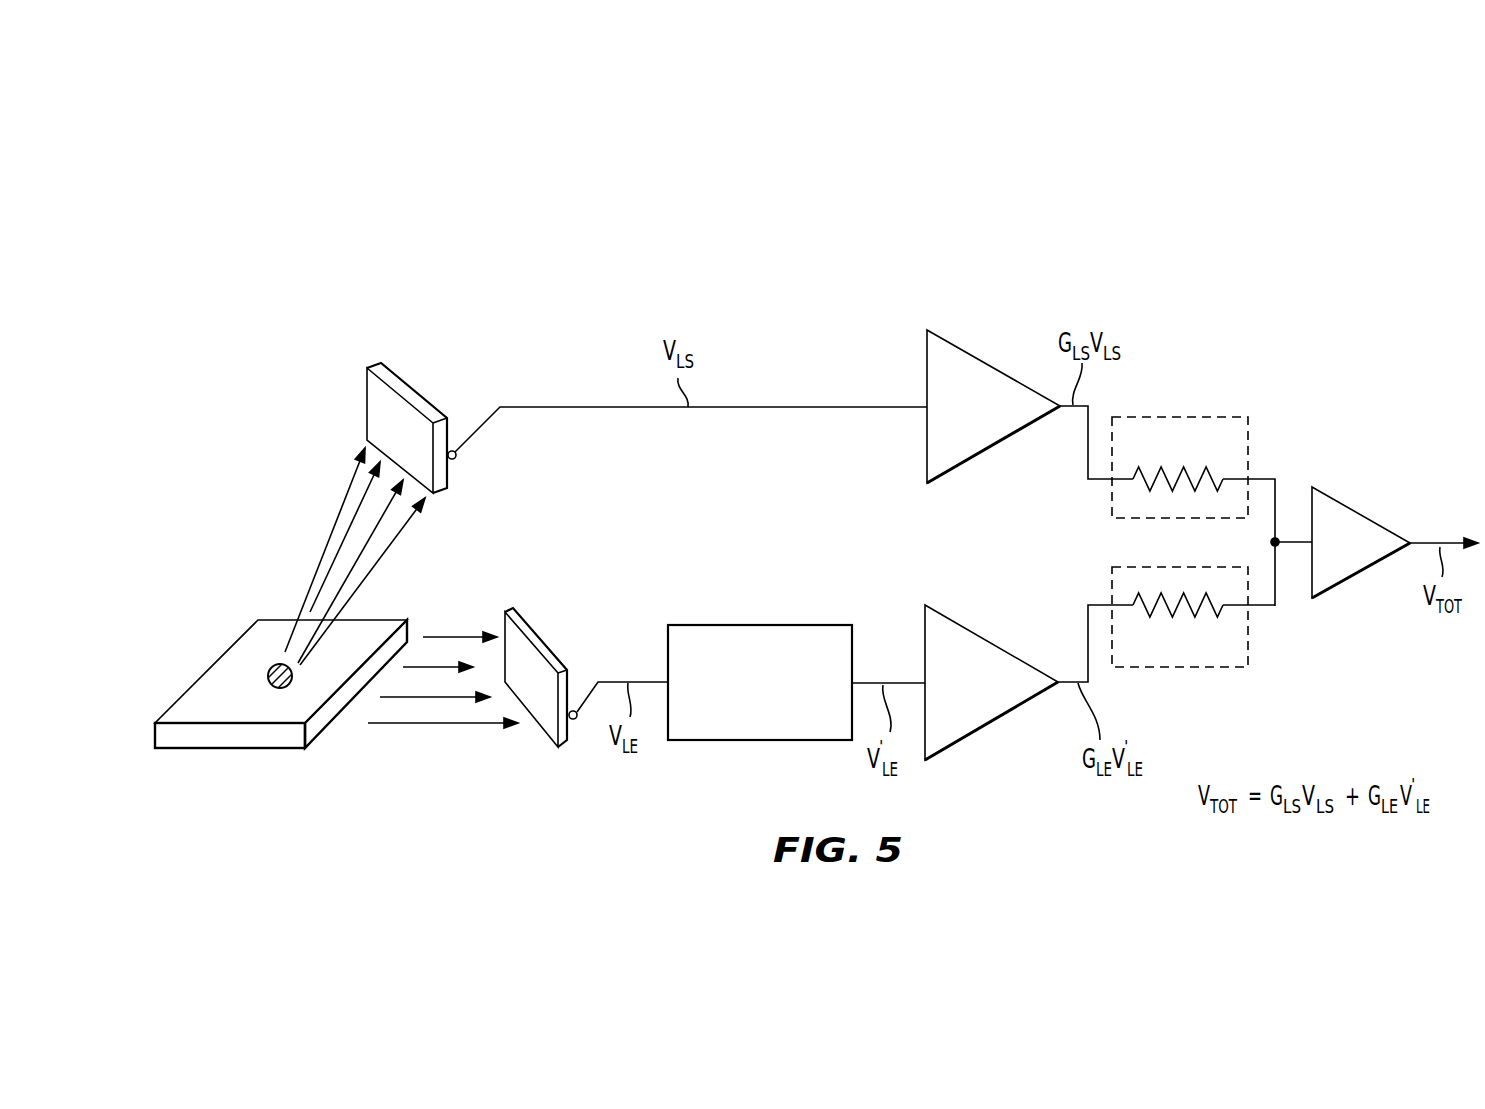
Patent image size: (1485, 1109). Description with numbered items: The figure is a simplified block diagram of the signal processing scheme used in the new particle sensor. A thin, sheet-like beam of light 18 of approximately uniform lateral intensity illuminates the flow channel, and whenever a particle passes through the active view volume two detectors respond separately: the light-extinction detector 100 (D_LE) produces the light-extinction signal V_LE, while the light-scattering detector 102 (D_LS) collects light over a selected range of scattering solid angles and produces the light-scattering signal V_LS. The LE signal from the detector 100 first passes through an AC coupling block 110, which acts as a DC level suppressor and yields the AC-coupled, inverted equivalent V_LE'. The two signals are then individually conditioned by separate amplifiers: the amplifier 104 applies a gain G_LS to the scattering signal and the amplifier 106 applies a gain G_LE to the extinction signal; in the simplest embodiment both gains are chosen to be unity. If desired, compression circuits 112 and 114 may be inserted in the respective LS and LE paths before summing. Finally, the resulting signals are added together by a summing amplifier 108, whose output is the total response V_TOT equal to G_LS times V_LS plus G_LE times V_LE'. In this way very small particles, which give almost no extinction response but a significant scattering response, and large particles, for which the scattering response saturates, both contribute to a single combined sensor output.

The sheet-like beam of light 18 is at (242, 640).
The light-extinction detector 100 is at (548, 653).
The light-scattering detector 102 is at (368, 407).
The amplifier 104 is at (980, 447).
The amplifier 106 is at (970, 730).
The summing amplifier 108 is at (1357, 510).
The AC coupling block 110 is at (768, 625).
The compression circuit 112 is at (1175, 417).
The compression circuit 114 is at (1210, 668).